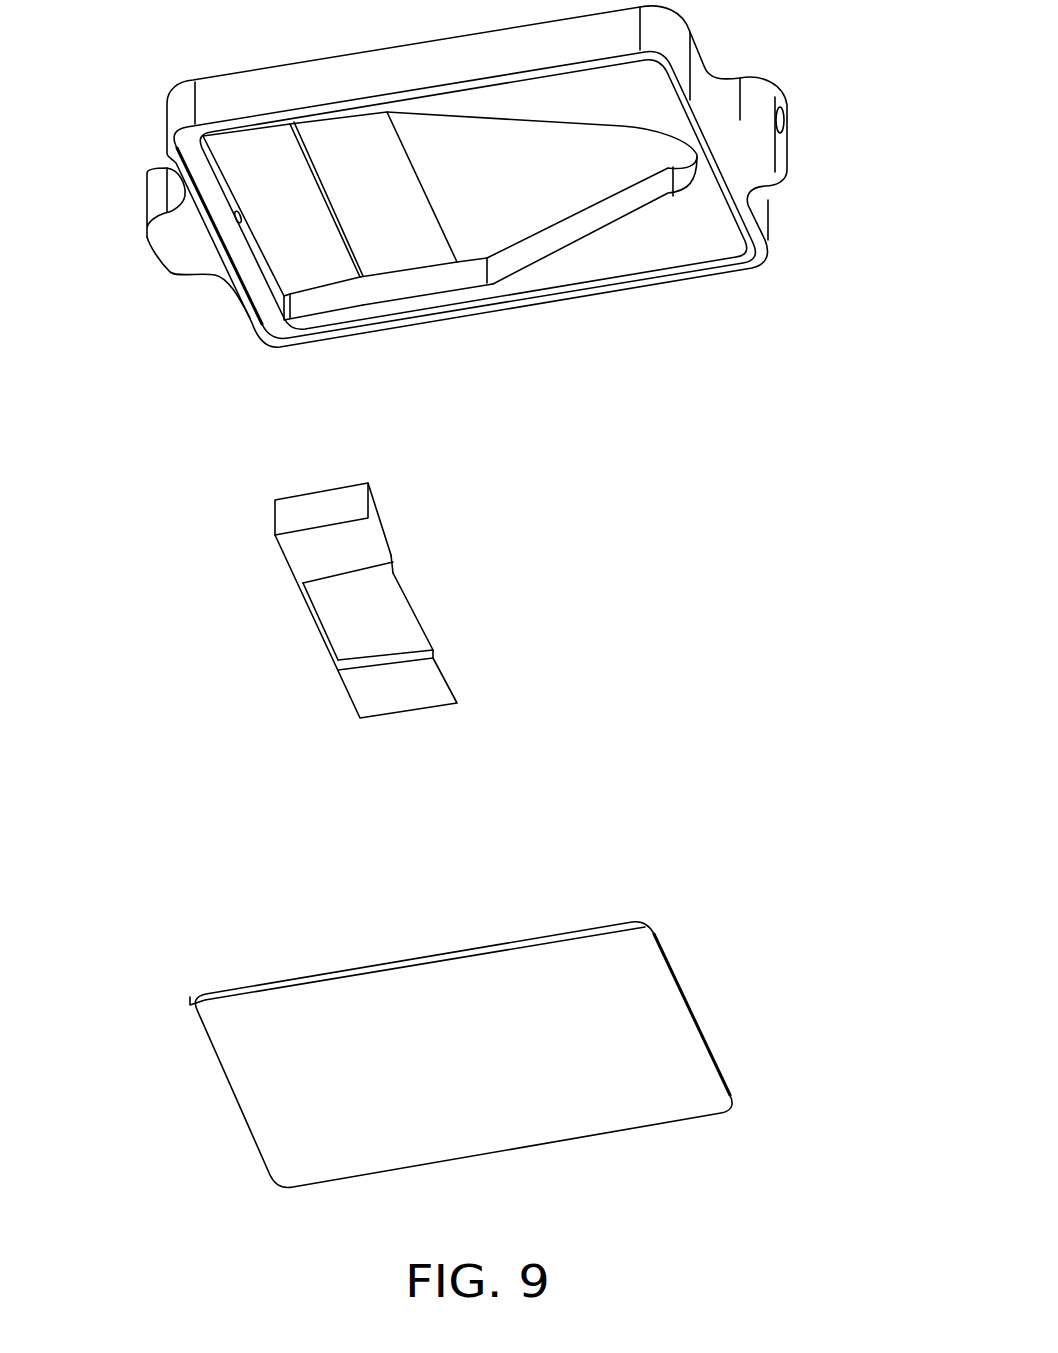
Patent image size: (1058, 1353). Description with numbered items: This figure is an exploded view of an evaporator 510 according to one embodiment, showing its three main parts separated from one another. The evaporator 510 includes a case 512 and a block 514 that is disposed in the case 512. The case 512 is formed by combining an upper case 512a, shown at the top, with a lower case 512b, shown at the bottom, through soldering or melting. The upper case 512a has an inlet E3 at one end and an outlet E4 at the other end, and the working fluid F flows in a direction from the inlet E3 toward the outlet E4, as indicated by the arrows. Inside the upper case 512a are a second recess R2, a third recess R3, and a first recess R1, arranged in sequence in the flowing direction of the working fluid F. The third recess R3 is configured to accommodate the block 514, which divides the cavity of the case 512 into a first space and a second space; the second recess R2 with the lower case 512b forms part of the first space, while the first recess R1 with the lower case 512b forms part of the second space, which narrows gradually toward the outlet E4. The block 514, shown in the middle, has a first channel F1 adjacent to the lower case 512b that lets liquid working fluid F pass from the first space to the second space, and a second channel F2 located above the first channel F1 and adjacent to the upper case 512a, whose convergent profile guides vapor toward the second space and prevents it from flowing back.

The evaporator 510 is at (727, 1241).
The case 512 is at (125, 826).
The upper case 512a is at (301, 86).
The lower case 512b is at (681, 978).
The block 514 is at (302, 513).
The inlet E3 is at (151, 250).
The outlet E4 is at (781, 118).
The working fluid F is at (111, 271).
The first channel F1 is at (350, 617).
The second channel F2 is at (412, 590).
The first recess R1 is at (520, 212).
The second recess R2 is at (322, 257).
The third recess R3 is at (403, 237).